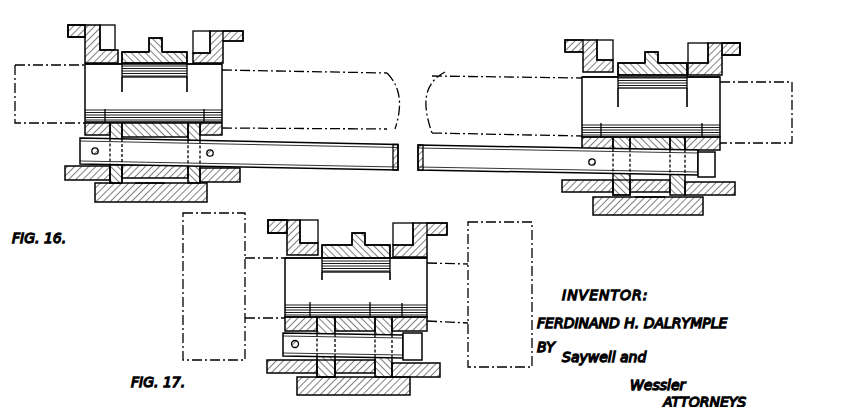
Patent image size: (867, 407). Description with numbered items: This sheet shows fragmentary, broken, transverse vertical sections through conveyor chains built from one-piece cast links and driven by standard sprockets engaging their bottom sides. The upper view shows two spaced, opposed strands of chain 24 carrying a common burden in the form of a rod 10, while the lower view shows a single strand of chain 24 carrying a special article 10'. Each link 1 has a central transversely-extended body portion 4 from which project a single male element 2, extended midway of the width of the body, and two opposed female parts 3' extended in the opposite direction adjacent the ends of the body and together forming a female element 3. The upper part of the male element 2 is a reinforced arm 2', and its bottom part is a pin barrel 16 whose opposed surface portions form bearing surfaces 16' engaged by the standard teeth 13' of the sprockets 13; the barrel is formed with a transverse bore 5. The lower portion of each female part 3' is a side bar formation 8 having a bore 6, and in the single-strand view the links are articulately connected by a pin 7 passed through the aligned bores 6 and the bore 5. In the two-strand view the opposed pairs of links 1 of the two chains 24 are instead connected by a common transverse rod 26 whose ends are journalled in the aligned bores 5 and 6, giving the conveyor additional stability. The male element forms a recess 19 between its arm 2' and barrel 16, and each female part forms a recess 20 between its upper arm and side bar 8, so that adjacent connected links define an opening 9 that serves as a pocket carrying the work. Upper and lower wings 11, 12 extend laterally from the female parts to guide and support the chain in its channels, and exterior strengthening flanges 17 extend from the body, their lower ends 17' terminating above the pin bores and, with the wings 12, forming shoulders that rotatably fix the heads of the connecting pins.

In FIG. 16, the chain link 1 is at (172, 52).
In FIG. 17, the chain link 1 is at (370, 245).
In FIG. 16, the male element 2 is at (404, 40).
In FIG. 17, the male element 2 is at (356, 220).
In FIG. 16, the reinforced arm 2' is at (401, 35).
In FIG. 17, the reinforced arm 2' is at (360, 214).
In FIG. 16, the female element 3 is at (466, 40).
In FIG. 17, the female element 3 is at (432, 220).
In FIG. 16, the female parts 3' is at (400, 37).
In FIG. 17, the female parts 3' is at (353, 219).
In FIG. 16, the body portion 4 is at (404, 85).
In FIG. 17, the body portion 4 is at (356, 272).
In FIG. 16, the transverse bore 5 is at (150, 125).
In FIG. 17, the transverse bore 5 is at (340, 317).
In FIG. 16, the bores 6 is at (404, 116).
In FIG. 17, the bores 6 is at (355, 302).
In FIG. 17, the pin 7 is at (283, 343).
In FIG. 16, the side bar formation 8 is at (115, 185).
In FIG. 17, the side bar formation 8 is at (347, 356).
In FIG. 16, the opening 9 is at (223, 61).
In FIG. 17, the opening 9 is at (287, 257).
In FIG. 16, the rod 10 is at (403, 96).
In FIG. 17, the special article 10' is at (351, 290).
In FIG. 16, the wings 11 is at (68, 27).
In FIG. 17, the wings 11 is at (270, 222).
In FIG. 16, the wings 12 is at (70, 180).
In FIG. 17, the wings 12 is at (280, 373).
In FIG. 16, the sprockets 13 is at (411, 215).
In FIG. 17, the sprockets 13 is at (382, 387).
In FIG. 16, the standard teeth 13' is at (400, 211).
In FIG. 17, the standard teeth 13' is at (370, 302).
In FIG. 16, the pin barrel 16 is at (396, 185).
In FIG. 17, the pin barrel 16 is at (350, 356).
In FIG. 16, the bearing surfaces 16' is at (394, 217).
In FIG. 17, the bearing surfaces 16' is at (355, 377).
In FIG. 16, the strengthening flanges 17 is at (425, 100).
In FIG. 17, the strengthening flanges 17 is at (359, 287).
In FIG. 16, the lower ends of flanges 17' is at (397, 127).
In FIG. 17, the lower ends of flanges 17' is at (374, 317).
In FIG. 16, the recess 19 is at (170, 88).
In FIG. 17, the recess 19 is at (400, 282).
In FIG. 16, the recess 20 is at (98, 65).
In FIG. 17, the recess 20 is at (300, 256).
In FIG. 16, the chain 24 is at (68, 44).
In FIG. 17, the chain 24 is at (280, 220).
In FIG. 16, the transverse rod 26 is at (80, 150).
In FIG. 17, the transverse rod 26 is at (352, 346).